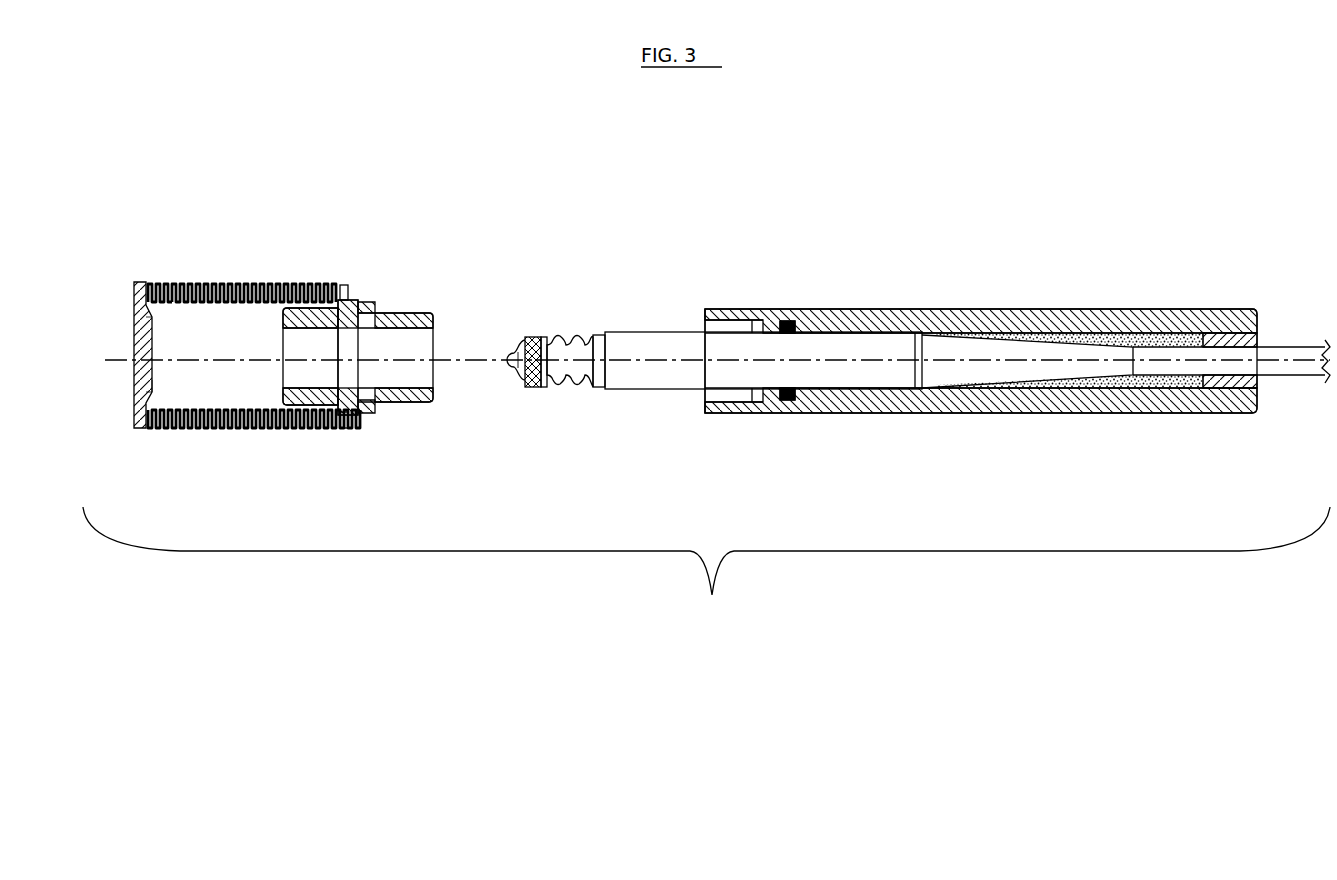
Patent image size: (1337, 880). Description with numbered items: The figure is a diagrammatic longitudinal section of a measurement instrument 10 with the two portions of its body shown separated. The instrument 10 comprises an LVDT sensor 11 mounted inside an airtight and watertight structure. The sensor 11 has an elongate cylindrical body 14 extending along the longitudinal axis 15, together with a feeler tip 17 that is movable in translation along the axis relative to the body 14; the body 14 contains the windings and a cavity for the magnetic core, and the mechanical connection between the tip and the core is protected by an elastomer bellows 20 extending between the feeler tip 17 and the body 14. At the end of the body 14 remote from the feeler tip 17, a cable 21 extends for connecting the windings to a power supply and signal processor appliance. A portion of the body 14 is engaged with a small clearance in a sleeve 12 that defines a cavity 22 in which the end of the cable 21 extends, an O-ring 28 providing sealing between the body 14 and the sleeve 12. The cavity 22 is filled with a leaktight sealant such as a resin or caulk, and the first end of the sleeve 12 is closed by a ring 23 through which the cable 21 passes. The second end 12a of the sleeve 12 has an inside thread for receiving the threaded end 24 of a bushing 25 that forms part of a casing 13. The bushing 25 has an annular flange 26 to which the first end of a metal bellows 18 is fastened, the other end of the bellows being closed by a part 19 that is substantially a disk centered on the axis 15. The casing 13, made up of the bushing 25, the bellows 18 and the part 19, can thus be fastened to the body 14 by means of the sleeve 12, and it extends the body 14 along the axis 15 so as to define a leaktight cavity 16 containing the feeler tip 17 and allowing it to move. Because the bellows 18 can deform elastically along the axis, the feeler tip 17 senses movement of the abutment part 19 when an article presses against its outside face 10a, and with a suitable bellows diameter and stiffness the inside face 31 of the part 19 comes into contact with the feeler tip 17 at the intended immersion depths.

The measurement instrument 10 is at (706, 569).
The outside face 10a is at (134, 333).
The LVDT sensor 11 is at (630, 410).
The sleeve 12 is at (975, 309).
The second end of the sleeve 12a is at (705, 312).
The casing 13 is at (260, 452).
The elongate cylindrical body 14 is at (682, 372).
The longitudinal axis 15 is at (866, 356).
The leaktight cavity 16 is at (215, 318).
The feeler tip 17 is at (508, 344).
The metal bellows 18 is at (160, 290).
The part 19 is at (150, 372).
The elastomer bellows 20 is at (566, 336).
The cable 21 is at (1291, 347).
The cavity 22 is at (1135, 333).
The ring 23 is at (1254, 395).
The threaded end 24 is at (408, 313).
The bushing 25 is at (362, 302).
The annular flange 26 is at (344, 286).
The O-ring 28 is at (787, 321).
The inside face 31 is at (154, 392).